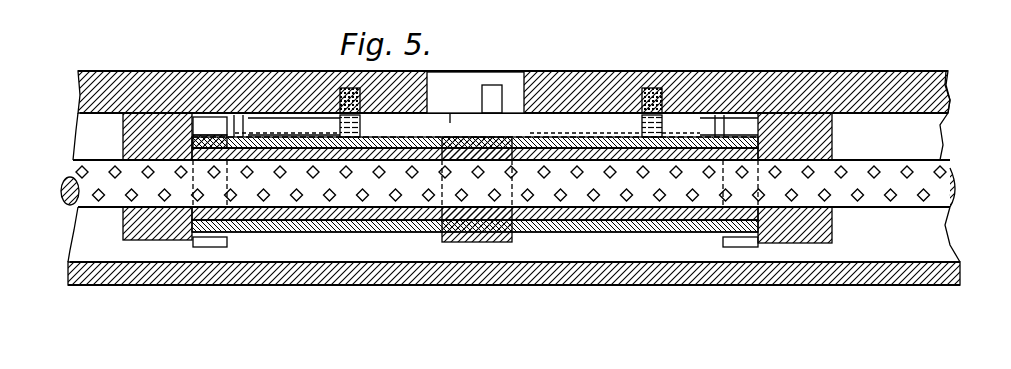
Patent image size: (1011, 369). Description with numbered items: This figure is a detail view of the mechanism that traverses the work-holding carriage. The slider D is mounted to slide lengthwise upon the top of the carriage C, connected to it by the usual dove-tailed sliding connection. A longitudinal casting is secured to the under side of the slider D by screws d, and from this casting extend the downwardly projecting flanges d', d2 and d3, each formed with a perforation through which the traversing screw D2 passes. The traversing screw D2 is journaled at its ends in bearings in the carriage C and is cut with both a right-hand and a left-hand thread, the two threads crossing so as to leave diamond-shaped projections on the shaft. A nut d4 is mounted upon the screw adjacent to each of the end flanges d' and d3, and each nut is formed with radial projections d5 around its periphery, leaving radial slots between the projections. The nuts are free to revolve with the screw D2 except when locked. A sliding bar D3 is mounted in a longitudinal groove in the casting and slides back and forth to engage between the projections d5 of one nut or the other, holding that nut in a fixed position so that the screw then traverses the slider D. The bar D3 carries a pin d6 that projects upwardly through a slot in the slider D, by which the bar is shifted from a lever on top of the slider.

The carriage C is at (925, 275).
The slider D is at (935, 105).
The traversing screw D2 is at (940, 185).
The sliding bar D3 is at (447, 107).
The screws d is at (501, 113).
The flange d' is at (116, 182).
The flange d2 is at (442, 240).
The flange d3 is at (832, 232).
The nut d4 is at (300, 237).
The radial projections d5 is at (224, 244).
The pin d6 is at (498, 85).